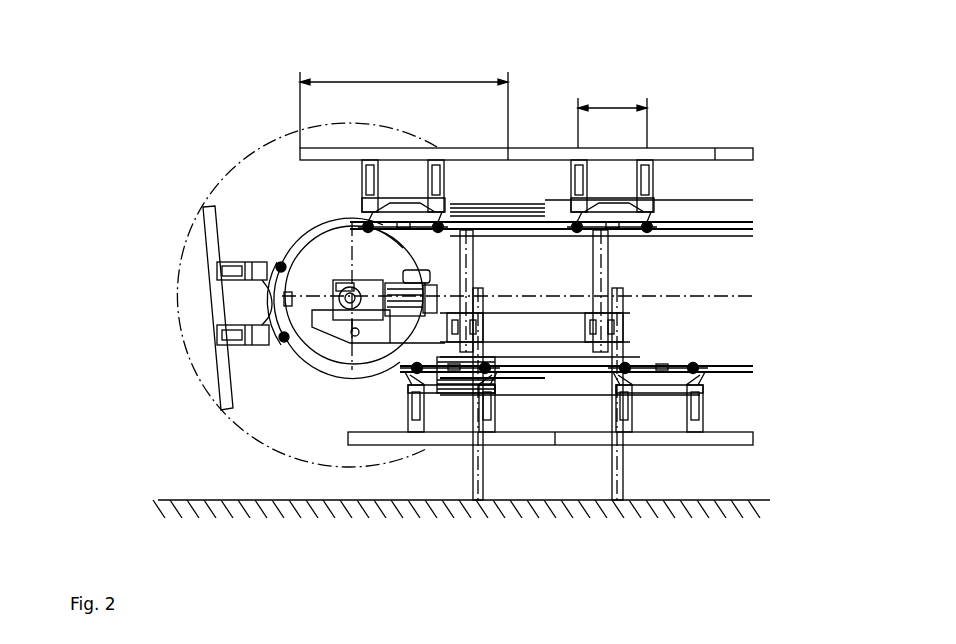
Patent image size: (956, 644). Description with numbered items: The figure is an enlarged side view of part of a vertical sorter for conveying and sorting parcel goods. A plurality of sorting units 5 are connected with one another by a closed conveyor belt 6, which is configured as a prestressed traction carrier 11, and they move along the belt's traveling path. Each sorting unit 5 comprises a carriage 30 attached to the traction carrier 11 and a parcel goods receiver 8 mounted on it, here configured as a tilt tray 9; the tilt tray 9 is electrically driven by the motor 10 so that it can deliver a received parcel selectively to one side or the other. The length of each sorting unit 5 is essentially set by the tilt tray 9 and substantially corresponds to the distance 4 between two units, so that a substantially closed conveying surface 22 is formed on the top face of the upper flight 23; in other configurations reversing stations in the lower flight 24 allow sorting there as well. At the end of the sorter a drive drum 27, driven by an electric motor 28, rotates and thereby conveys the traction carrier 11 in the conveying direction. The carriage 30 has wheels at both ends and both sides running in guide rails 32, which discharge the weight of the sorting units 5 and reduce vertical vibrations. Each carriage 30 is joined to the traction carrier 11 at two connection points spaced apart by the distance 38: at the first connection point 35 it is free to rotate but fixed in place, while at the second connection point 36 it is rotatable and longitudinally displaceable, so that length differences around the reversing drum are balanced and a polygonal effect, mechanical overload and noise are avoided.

The distance 4 is at (404, 104).
The sorting unit 5 is at (298, 147).
The conveyor belt 6 is at (310, 228).
The parcel goods receiver 8 is at (285, 153).
The tilt tray 9 is at (283, 156).
The motor 10 is at (660, 420).
The traction carrier 11 is at (297, 240).
The conveying surface 22 is at (561, 145).
The upper flight 23 is at (737, 222).
The lower flight 24 is at (737, 372).
The drive drum 27 is at (317, 343).
The electric motor 28 is at (447, 285).
The carriage 30 is at (707, 364).
The guide rail 32 is at (510, 350).
The first connection point 35 is at (605, 242).
The second connection point 36 is at (655, 230).
The distance 38 is at (612, 118).